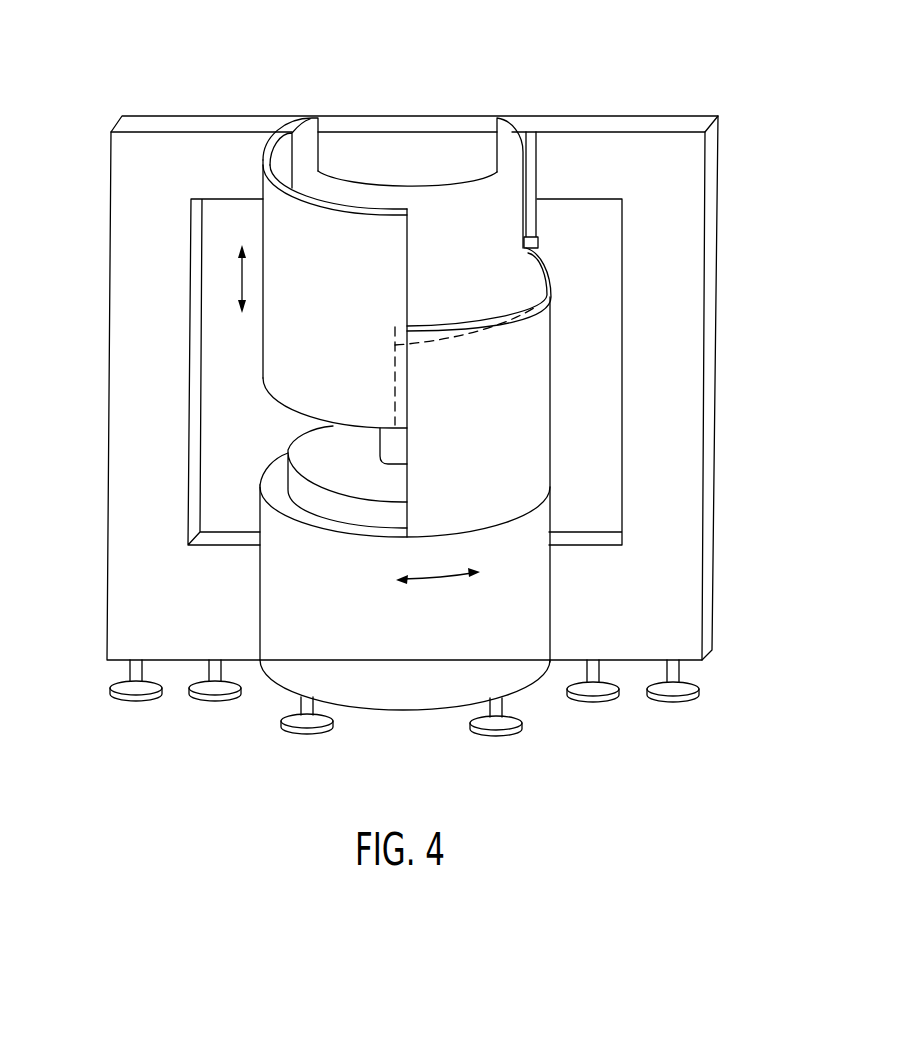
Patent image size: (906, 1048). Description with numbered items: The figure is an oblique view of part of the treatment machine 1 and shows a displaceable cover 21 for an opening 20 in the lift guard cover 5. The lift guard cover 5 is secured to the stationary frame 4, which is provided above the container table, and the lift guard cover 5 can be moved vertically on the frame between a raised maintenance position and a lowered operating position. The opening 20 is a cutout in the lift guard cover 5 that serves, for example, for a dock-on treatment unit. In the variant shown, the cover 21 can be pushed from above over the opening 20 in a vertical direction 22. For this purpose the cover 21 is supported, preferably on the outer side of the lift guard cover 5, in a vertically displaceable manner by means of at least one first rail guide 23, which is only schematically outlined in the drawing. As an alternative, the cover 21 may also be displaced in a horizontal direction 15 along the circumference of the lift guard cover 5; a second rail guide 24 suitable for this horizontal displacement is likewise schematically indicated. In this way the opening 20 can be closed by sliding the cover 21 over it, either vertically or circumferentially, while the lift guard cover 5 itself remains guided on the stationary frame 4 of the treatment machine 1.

The treatment machine 1 is at (722, 60).
The stationary frame 4 is at (675, 155).
The lift guard cover 5 is at (533, 353).
The horizontal direction 15 is at (445, 578).
The opening 20 is at (291, 429).
The displaceable cover 21 is at (262, 207).
The vertical direction 22 is at (242, 273).
The first rail guide 23 is at (398, 400).
The second rail guide 24 is at (535, 312).